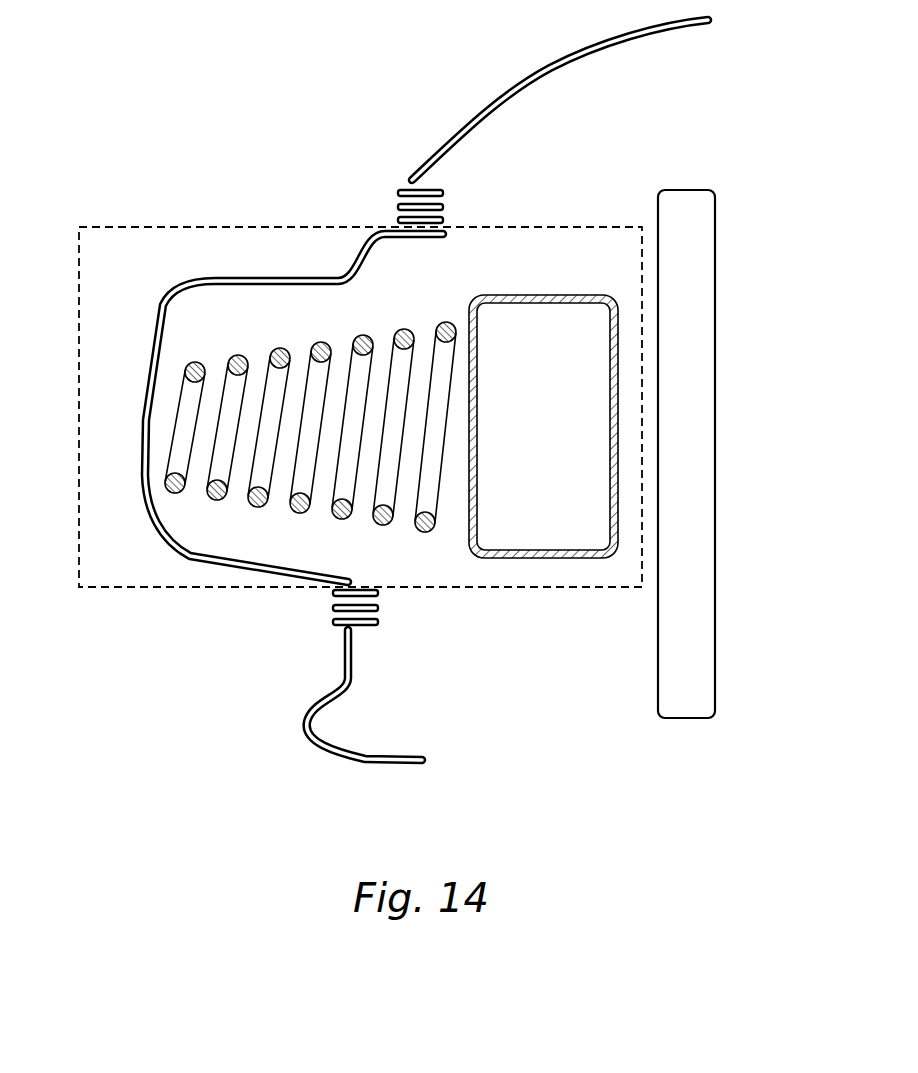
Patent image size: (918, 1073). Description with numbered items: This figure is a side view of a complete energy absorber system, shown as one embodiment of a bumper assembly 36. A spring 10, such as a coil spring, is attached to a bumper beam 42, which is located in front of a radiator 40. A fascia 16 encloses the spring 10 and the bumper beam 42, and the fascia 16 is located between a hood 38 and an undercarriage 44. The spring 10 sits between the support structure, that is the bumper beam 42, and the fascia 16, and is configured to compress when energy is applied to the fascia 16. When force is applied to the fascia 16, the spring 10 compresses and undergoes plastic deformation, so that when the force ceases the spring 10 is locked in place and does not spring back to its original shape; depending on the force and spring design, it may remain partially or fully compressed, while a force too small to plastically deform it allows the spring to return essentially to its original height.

The spring 10 is at (289, 524).
The fascia 16 is at (147, 350).
The bumper assembly 36 is at (182, 226).
The hood 38 is at (527, 73).
The radiator 40 is at (715, 343).
The bumper beam 42 is at (538, 293).
The undercarriage 44 is at (350, 758).